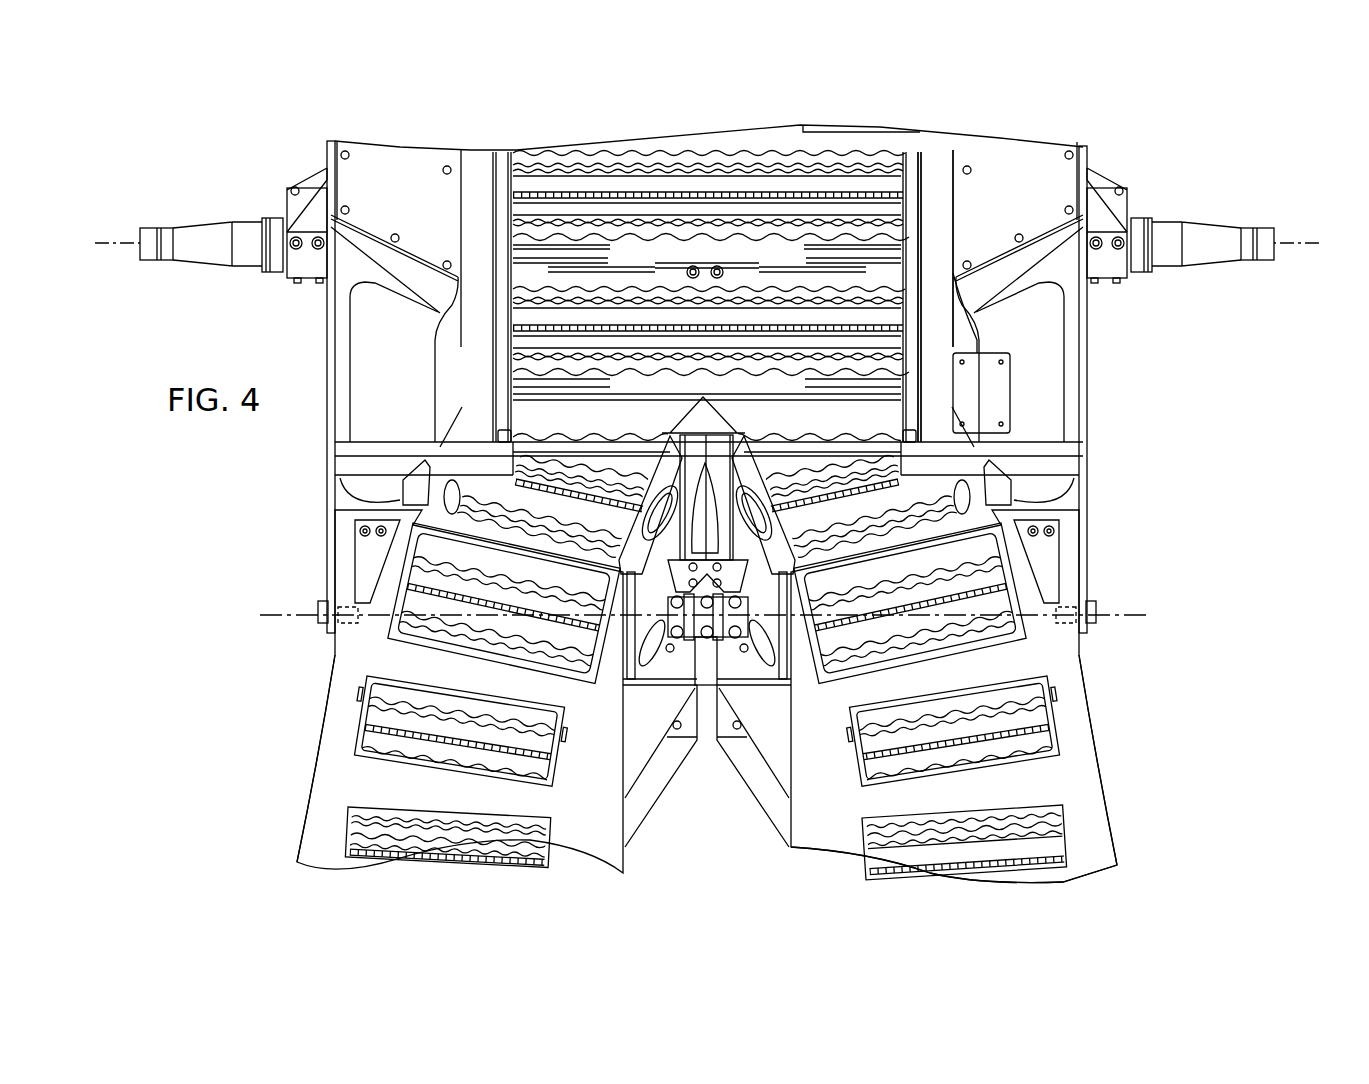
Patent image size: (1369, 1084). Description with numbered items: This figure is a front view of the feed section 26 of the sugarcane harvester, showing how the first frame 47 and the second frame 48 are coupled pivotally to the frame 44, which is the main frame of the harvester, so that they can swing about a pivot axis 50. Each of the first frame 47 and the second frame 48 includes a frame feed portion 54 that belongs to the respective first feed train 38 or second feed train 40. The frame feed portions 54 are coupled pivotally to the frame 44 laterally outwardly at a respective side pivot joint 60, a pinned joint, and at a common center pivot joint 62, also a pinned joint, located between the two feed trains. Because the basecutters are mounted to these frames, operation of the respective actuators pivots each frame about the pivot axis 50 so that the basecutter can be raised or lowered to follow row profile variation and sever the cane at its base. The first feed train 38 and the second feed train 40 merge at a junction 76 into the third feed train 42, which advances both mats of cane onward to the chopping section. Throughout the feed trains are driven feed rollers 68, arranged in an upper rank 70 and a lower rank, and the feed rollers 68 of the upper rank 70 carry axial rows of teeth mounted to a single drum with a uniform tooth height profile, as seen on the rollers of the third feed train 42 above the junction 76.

The feed section 26 is at (1152, 404).
The first feed train 38 is at (275, 770).
The second feed train 40 is at (1107, 771).
The third feed train 42 is at (845, 118).
The frame 44 is at (935, 156).
The first frame 47 is at (353, 664).
The second frame 48 is at (1064, 692).
The pivot axis 50 is at (1126, 614).
The frame feed portion 54 is at (334, 773).
The side pivot joint 60 is at (320, 606).
The center pivot joint 62 is at (720, 628).
The feed roller 68 is at (883, 186).
The upper rank 70 is at (1080, 852).
The junction 76 is at (726, 419).